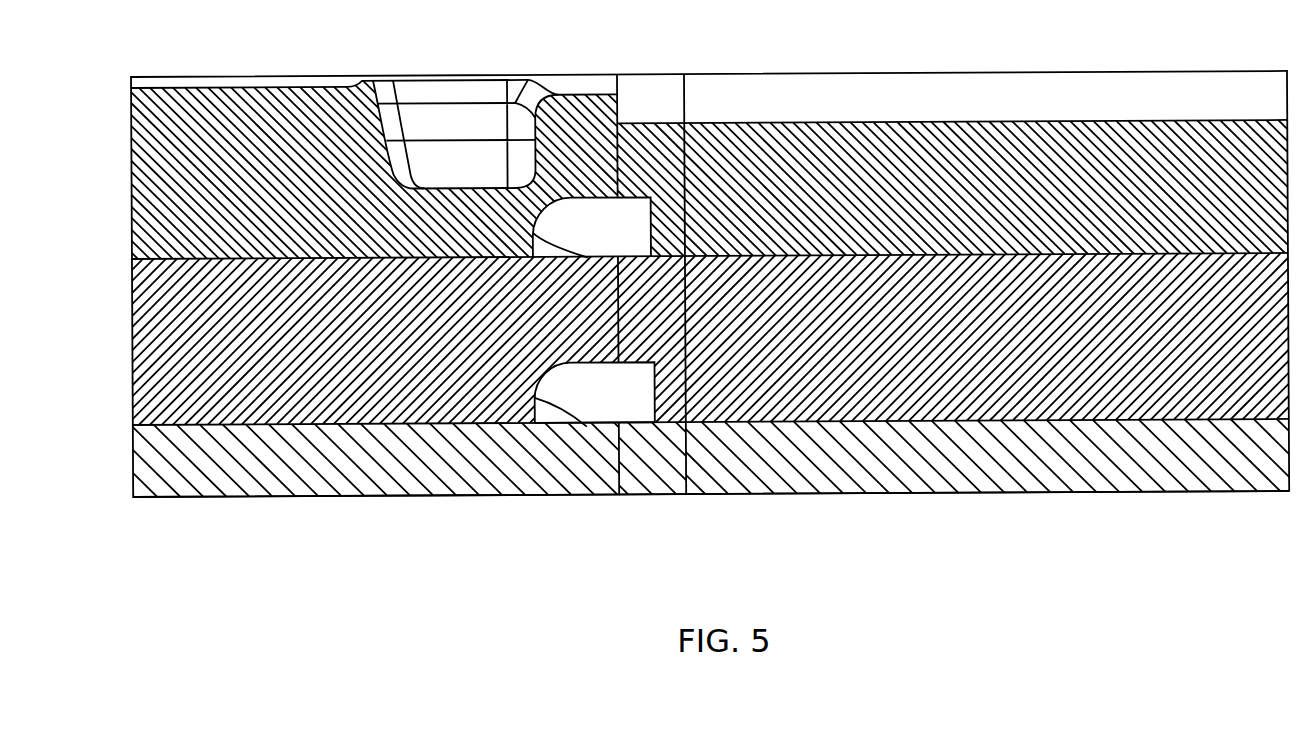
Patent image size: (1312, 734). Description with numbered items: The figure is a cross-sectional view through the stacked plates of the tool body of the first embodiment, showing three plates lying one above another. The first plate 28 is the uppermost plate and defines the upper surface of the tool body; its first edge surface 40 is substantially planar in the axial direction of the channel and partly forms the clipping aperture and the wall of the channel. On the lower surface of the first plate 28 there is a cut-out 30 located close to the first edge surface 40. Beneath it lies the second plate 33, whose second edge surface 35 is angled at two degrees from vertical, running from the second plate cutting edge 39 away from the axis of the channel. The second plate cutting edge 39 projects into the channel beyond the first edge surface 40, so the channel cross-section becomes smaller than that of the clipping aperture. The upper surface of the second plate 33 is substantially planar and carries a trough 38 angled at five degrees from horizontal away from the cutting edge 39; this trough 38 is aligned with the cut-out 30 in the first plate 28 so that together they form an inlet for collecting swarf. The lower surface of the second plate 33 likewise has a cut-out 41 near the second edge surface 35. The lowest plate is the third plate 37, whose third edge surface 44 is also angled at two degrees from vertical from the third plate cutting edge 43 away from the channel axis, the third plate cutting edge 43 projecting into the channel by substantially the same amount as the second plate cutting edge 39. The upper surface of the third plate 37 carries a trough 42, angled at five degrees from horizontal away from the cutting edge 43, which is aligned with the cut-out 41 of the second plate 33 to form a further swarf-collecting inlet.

The first plate 28 is at (177, 181).
The cut-out 30 is at (575, 189).
The second plate 33 is at (167, 355).
The second edge surface 35 is at (677, 260).
The third plate 37 is at (205, 483).
The trough 38 is at (532, 235).
The second plate cutting edge 39 is at (613, 275).
The first edge surface 40 is at (618, 128).
The cut-out 41 is at (588, 366).
The trough 42 is at (533, 400).
The third plate cutting edge 43 is at (604, 427).
The third edge surface 44 is at (618, 478).